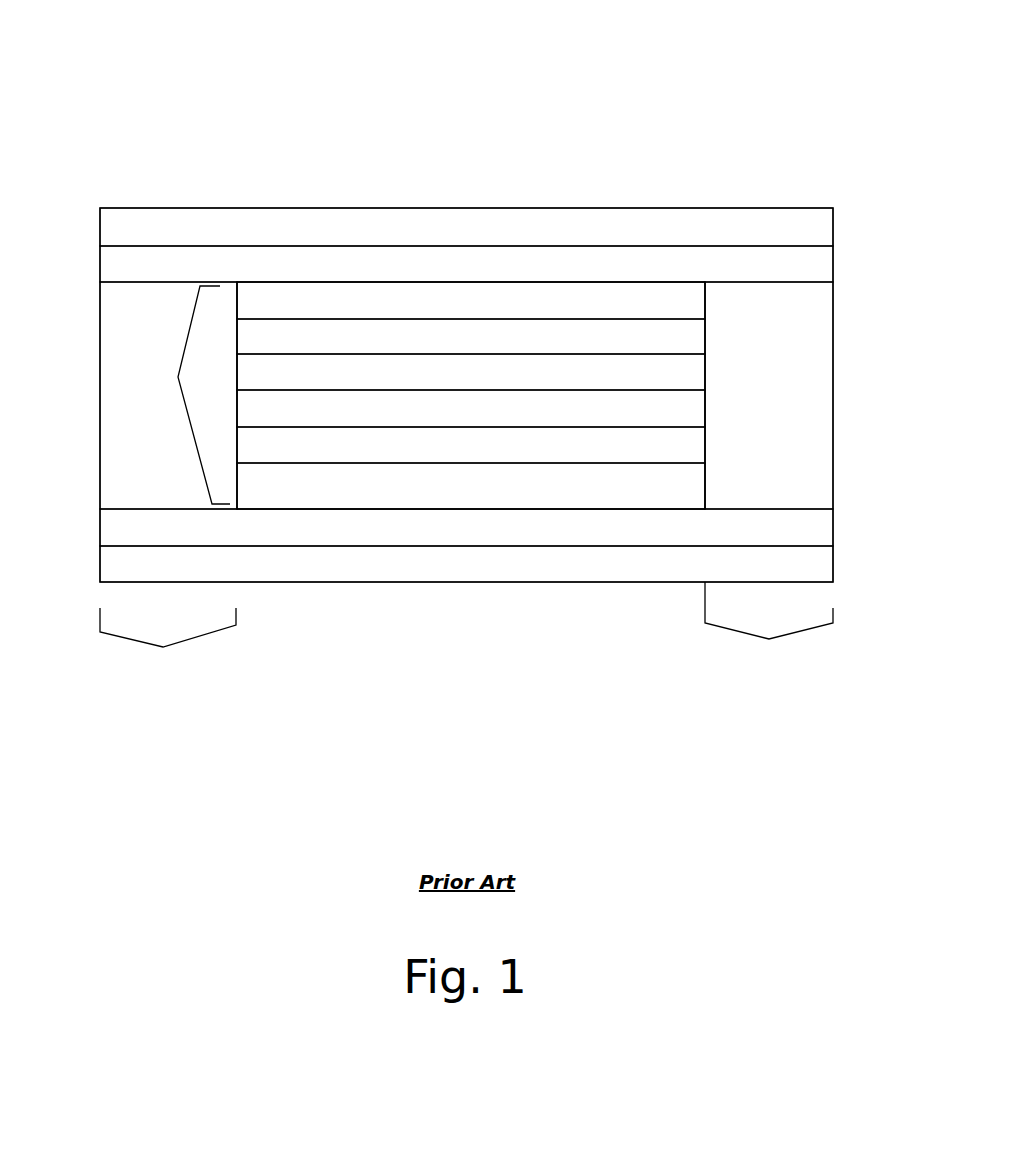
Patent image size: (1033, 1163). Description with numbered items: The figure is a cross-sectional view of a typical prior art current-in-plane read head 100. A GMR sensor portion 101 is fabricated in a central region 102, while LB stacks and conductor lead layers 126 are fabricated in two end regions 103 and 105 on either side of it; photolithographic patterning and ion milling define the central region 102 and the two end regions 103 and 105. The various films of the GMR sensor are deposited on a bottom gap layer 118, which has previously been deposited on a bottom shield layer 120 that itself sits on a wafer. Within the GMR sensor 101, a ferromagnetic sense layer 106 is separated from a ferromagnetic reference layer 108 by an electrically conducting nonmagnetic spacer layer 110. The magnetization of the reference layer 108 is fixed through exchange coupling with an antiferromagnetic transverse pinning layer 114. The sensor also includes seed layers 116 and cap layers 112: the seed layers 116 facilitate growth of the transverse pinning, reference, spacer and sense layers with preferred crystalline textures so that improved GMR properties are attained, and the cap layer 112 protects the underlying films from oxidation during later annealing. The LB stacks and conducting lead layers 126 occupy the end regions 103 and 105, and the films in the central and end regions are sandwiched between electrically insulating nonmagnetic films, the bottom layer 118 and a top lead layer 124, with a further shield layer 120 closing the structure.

The CIP read head 100 is at (795, 65).
The GMR sensor portion 101 is at (178, 377).
The central region 102 is at (705, 582).
The end region 103 is at (163, 647).
The end region 105 is at (769, 639).
The ferromagnetic sense layer 106 is at (687, 339).
The ferromagnetic reference layer 108 is at (687, 413).
The spacer layer 110 is at (687, 373).
The cap layer 112 is at (687, 298).
The transverse pinning layer 114 is at (687, 449).
The seed layer 116 is at (687, 495).
The bottom gap layer 118 is at (792, 531).
The bottom shield layer 120 is at (787, 226).
The top lead layer 124 is at (782, 263).
The LB stacks and conductor lead layers 126 is at (126, 420).